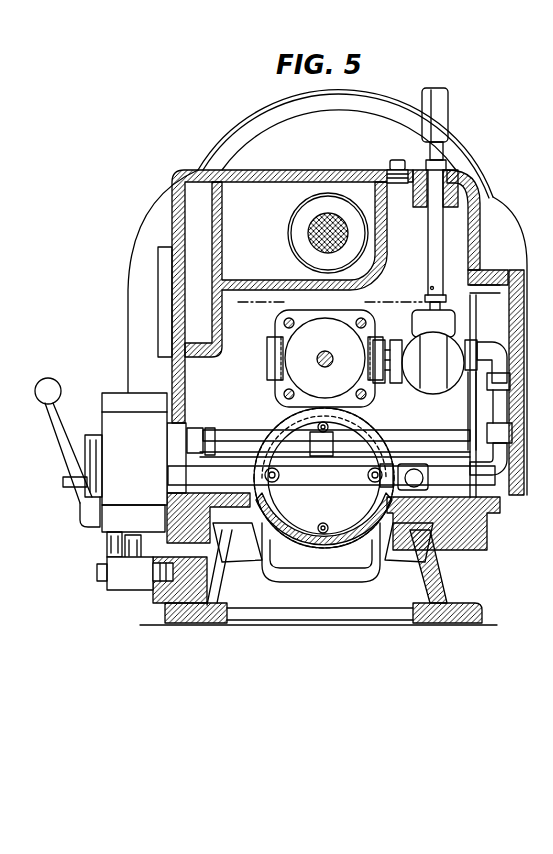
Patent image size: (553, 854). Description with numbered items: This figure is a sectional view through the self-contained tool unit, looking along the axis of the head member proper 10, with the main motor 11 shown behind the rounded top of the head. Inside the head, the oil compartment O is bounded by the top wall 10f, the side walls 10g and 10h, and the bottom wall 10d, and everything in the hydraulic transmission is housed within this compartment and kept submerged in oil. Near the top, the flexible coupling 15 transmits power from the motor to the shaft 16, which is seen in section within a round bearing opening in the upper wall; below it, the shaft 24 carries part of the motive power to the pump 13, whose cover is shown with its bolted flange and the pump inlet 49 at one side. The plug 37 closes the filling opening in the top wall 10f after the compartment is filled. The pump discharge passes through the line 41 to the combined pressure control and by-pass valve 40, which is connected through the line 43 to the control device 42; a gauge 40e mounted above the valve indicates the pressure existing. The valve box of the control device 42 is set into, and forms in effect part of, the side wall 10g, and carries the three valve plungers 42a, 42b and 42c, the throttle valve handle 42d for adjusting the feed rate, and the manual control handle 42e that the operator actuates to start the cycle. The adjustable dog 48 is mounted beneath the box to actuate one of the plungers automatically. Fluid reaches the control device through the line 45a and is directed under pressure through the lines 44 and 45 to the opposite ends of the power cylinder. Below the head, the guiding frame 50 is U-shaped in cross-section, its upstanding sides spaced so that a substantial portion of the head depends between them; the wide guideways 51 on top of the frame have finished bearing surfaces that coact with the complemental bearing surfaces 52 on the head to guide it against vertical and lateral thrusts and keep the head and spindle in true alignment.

The head member proper 10 is at (492, 197).
The bottom wall 10d is at (262, 565).
The top wall 10f is at (300, 431).
The side wall 10g is at (187, 405).
The side wall 10h is at (478, 238).
The main motor 11 is at (339, 140).
The pump 13 is at (325, 358).
The flexible coupling 15 is at (368, 230).
The shaft 16 is at (318, 234).
The shaft 24 is at (327, 366).
The plug 37 is at (388, 163).
The pressure control and by-pass valve 40 is at (431, 392).
The gauge 40e is at (448, 118).
The line 41 is at (386, 343).
The control device 42 is at (126, 449).
The valve plunger 42a is at (103, 541).
The valve plunger 42b is at (133, 518).
The valve plunger 42c is at (107, 552).
The throttle valve handle 42d is at (66, 484).
The manual control handle 42e is at (52, 378).
The line 43 is at (401, 432).
The line 44 is at (226, 425).
The line 45 is at (305, 482).
The line 45a is at (428, 472).
The adjustable dog 48 is at (135, 573).
The pump inlet 49 is at (275, 358).
The guiding frame 50 is at (447, 586).
The guideways 51 is at (168, 502).
The bearing surfaces 52 is at (250, 530).
The oil compartment O is at (327, 317).